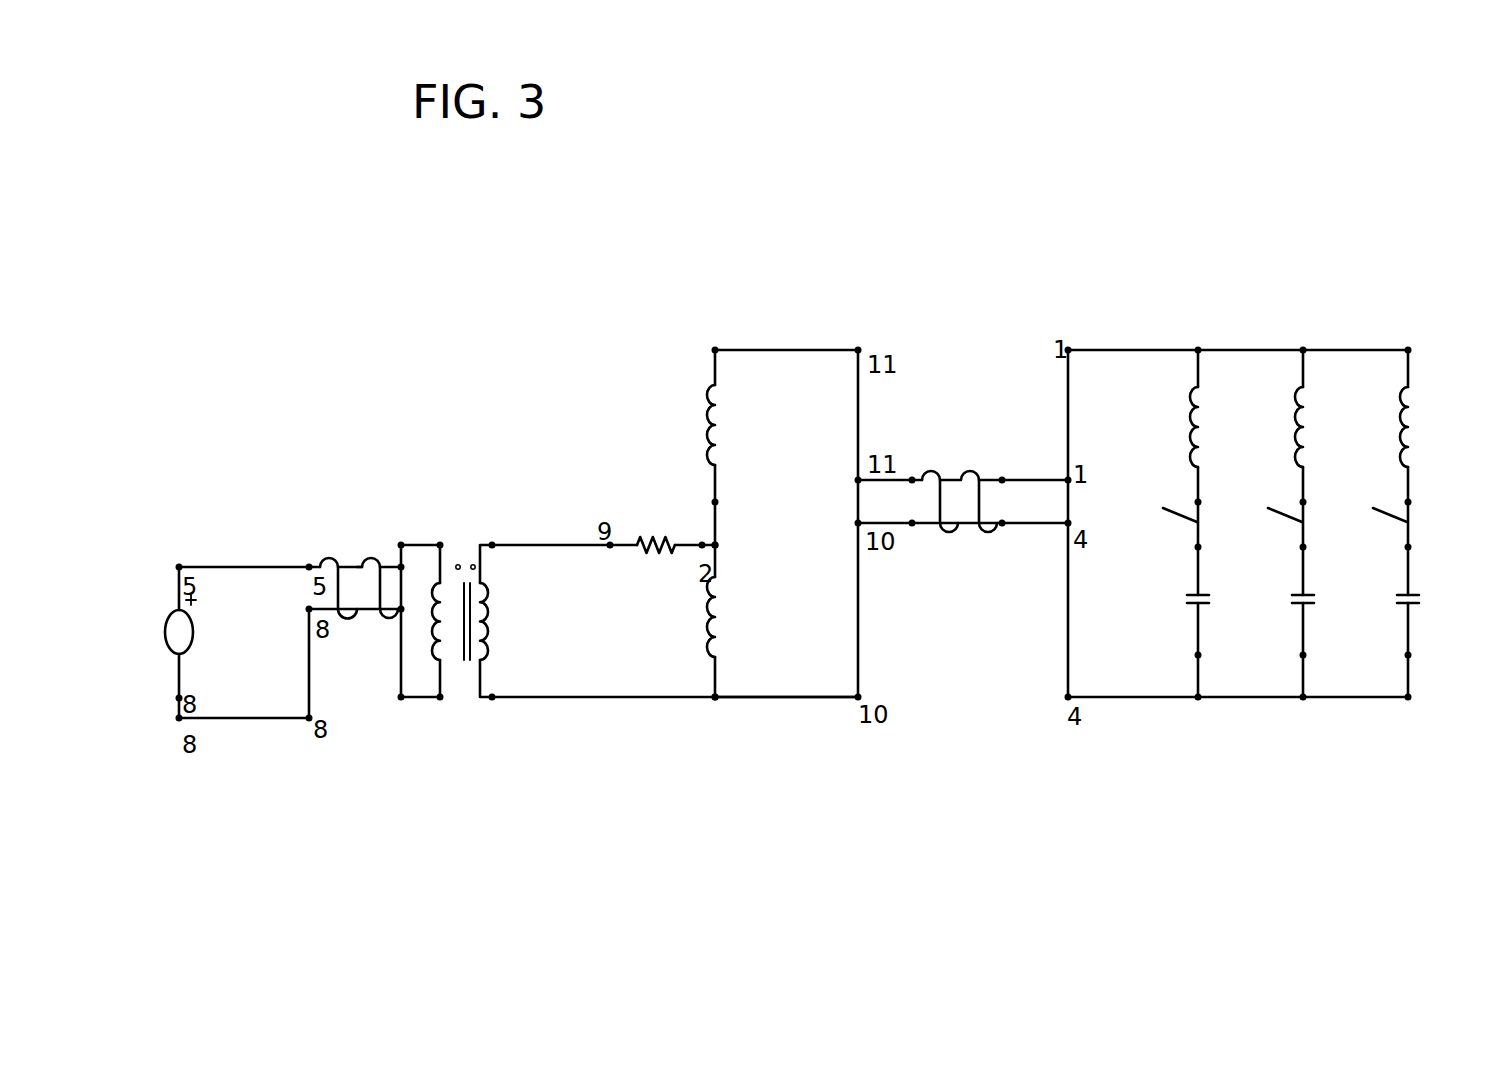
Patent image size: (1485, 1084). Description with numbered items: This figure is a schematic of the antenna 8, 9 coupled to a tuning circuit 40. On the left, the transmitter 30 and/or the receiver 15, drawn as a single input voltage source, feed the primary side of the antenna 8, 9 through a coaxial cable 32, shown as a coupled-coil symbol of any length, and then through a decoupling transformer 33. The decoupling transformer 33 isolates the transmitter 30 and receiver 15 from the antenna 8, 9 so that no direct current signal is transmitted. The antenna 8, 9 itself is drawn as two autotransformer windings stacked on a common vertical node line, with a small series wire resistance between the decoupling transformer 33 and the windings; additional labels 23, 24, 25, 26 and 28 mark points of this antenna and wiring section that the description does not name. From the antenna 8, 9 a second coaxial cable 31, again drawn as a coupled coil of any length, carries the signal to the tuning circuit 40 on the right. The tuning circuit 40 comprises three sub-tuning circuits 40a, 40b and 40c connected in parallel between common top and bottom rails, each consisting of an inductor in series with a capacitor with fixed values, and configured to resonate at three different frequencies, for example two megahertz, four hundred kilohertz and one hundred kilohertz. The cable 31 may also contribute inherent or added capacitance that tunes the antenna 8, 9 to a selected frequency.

The receiver 15 is at (197, 620).
The transmitter 30 is at (165, 615).
The coaxial cable 32 is at (362, 609).
The decoupling transformer 33 is at (478, 625).
The wire resistance Rwire 24 is at (705, 553).
The autotransformer tap node 28 is at (713, 545).
The autotransformer top terminal 26 is at (718, 347).
The autotransformer bottom terminal node 25 is at (715, 697).
The ground return line 23 is at (715, 697).
The coaxial cable 31 is at (968, 525).
The antenna 8 is at (828, 538).
The antenna 9 is at (735, 442).
The tuning circuit 40 is at (1254, 492).
The sub-tuning circuit 40a is at (1188, 524).
The sub-tuning circuit 40b is at (1294, 524).
The sub-tuning circuit 40c is at (1397, 524).